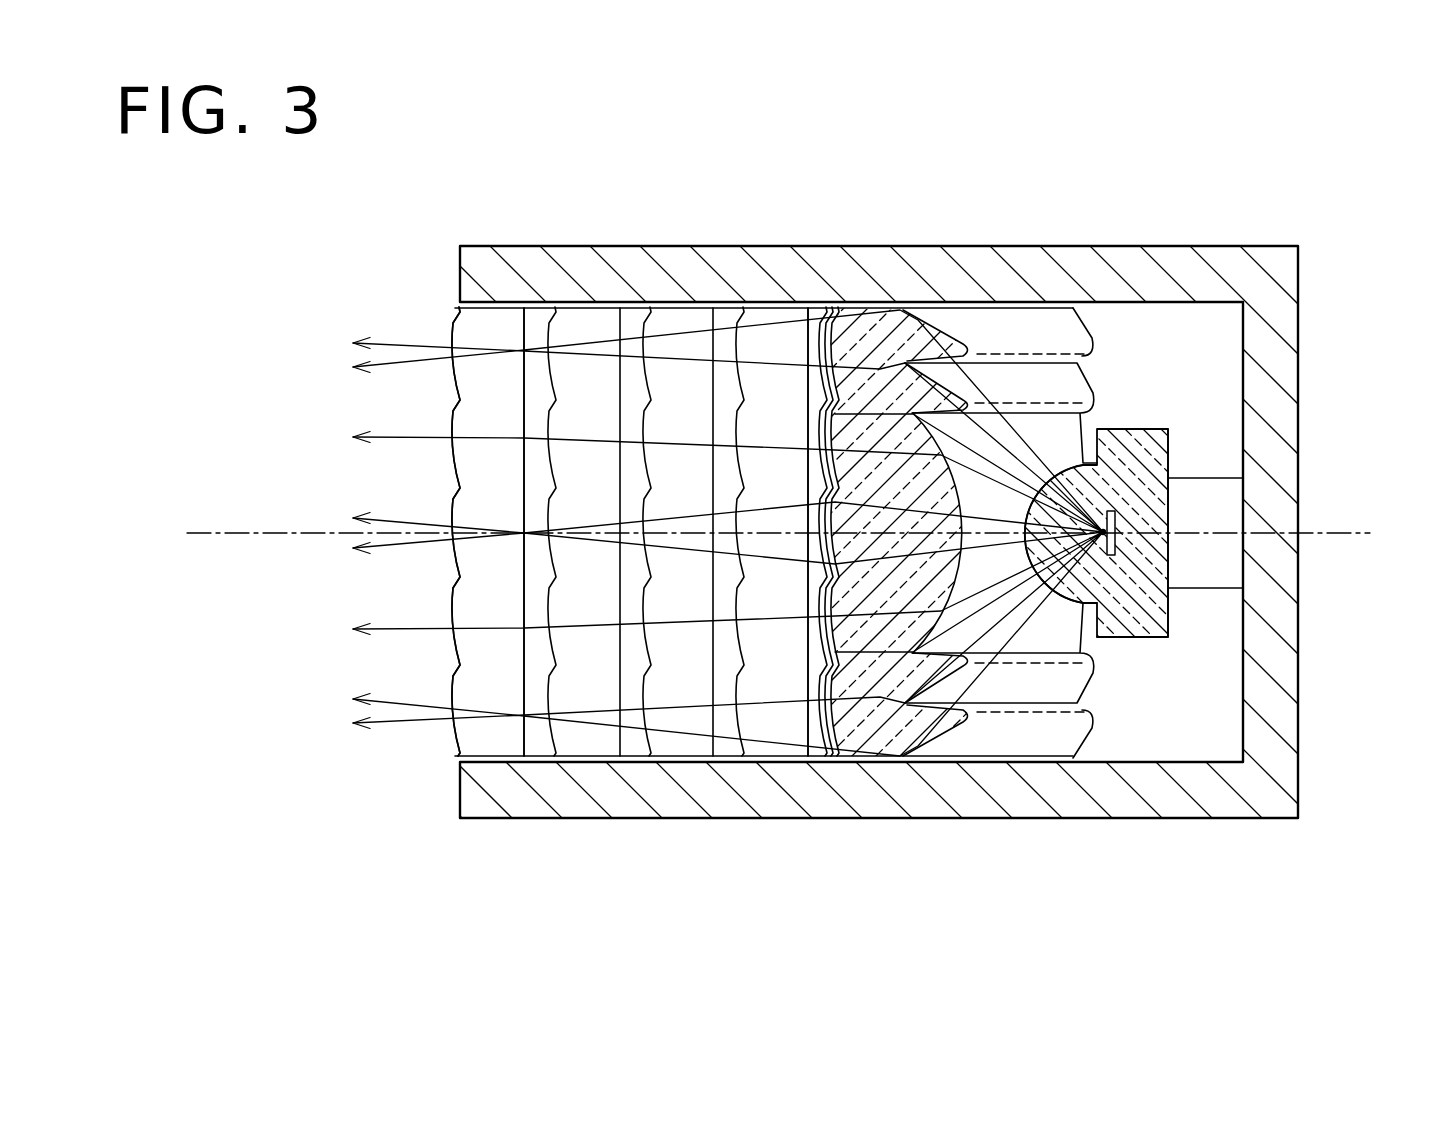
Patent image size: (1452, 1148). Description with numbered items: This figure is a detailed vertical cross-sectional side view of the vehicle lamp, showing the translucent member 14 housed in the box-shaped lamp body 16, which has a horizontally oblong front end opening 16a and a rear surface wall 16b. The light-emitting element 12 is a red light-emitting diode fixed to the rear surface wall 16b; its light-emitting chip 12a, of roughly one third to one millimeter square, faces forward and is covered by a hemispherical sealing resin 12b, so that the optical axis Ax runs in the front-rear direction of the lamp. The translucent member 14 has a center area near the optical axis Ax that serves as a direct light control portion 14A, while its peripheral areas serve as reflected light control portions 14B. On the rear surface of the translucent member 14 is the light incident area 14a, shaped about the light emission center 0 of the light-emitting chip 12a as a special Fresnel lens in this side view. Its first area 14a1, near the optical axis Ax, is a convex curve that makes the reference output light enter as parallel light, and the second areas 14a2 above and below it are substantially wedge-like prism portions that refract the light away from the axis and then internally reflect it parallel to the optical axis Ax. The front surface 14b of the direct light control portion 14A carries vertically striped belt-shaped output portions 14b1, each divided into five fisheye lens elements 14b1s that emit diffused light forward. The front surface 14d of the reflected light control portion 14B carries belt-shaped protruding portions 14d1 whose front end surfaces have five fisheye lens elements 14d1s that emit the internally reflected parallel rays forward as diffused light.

The light-emitting element 12 is at (1178, 407).
The light-emitting chip 12a is at (1114, 538).
The sealing resin 12b is at (1168, 614).
The light emission center 0 is at (1104, 532).
The translucent member 14 is at (855, 185).
The direct light control portion 14A is at (861, 292).
The light incident area 14a is at (970, 480).
The first area 14a1 is at (1048, 584).
The second areas 14a2 is at (975, 395).
The reflected light control portions 14B is at (641, 296).
The front surface of the direct light control portion 14b is at (810, 358).
The belt-shaped output portions 14b1 is at (837, 735).
The lens elements 14b1s is at (813, 645).
The front surface of the reflected light control portion 14d is at (433, 422).
The belt-shaped protruding portions 14d1 is at (575, 743).
The lens elements 14d1s is at (458, 650).
The lamp body 16 is at (1164, 228).
The front end opening 16a is at (460, 275).
The rear surface wall 16b is at (1277, 459).
The optical axis Ax is at (265, 533).